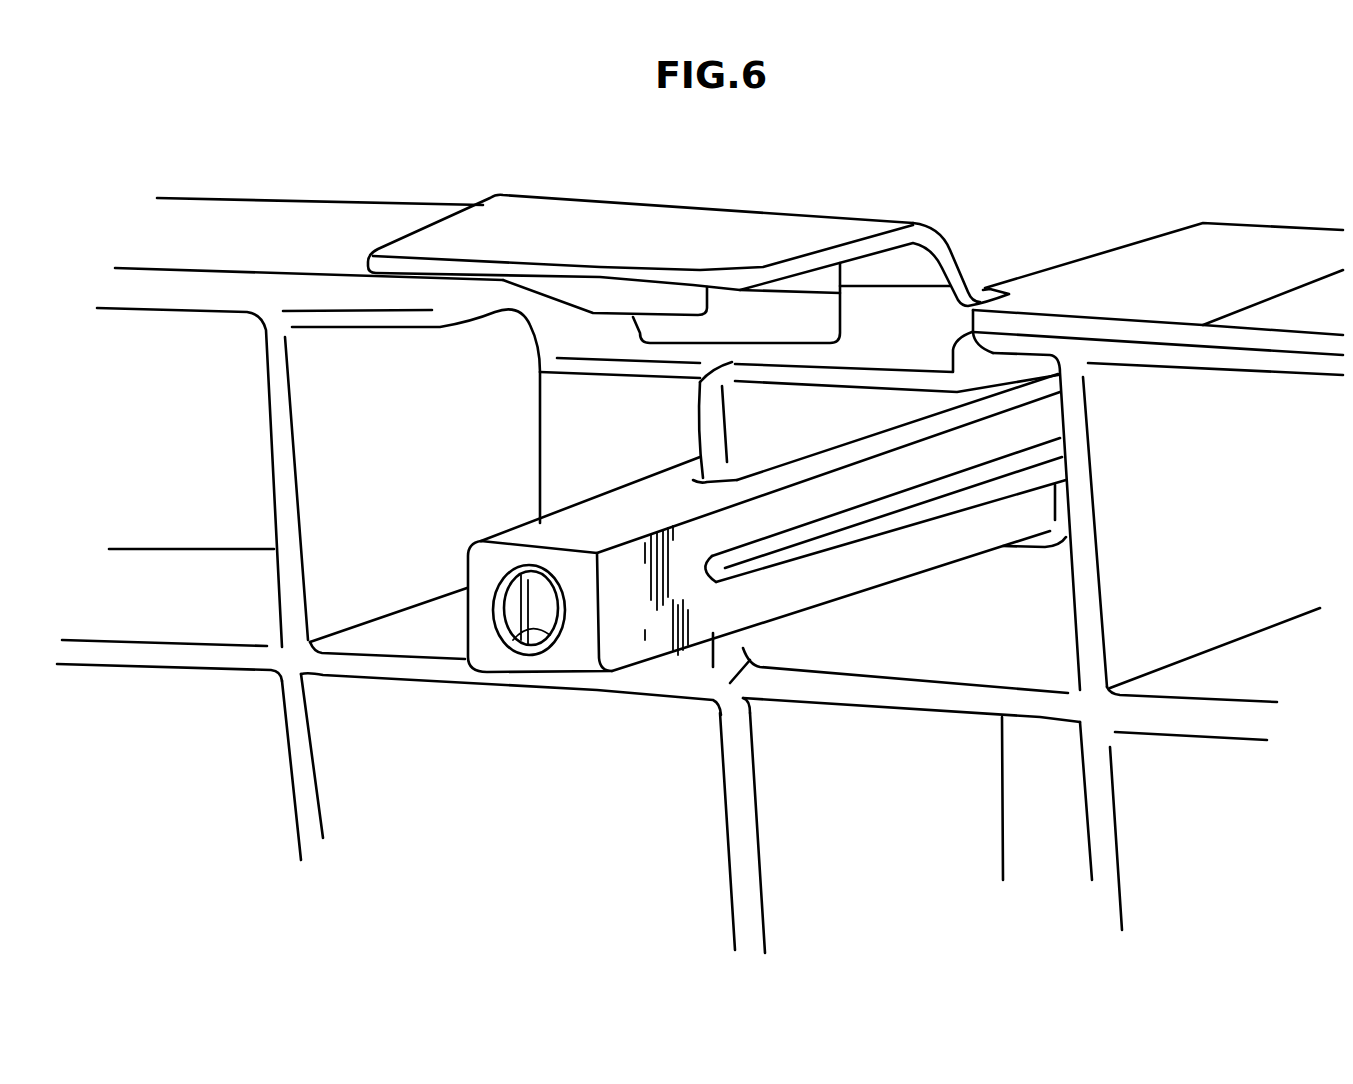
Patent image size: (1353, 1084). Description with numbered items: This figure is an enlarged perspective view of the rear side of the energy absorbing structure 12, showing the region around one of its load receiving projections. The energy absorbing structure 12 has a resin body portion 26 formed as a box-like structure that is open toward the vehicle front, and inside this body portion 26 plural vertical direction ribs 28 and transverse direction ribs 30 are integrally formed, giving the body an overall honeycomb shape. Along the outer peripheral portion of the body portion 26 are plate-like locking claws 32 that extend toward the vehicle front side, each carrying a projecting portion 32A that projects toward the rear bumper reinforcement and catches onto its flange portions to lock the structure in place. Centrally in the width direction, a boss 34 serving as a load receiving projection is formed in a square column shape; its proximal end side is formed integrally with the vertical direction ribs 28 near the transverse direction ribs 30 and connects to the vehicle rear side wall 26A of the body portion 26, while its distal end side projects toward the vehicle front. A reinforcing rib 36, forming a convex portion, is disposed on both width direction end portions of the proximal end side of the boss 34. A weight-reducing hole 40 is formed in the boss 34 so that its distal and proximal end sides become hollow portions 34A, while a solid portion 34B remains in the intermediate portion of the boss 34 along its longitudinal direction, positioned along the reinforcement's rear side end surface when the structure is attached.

The energy absorbing structure 12 is at (1080, 208).
The body portion 26 is at (333, 213).
The vehicle rear side wall 26A is at (577, 417).
The vertical direction ribs 28 is at (269, 437).
The transverse direction ribs 30 is at (172, 670).
The locking claws 32 is at (765, 228).
The projecting portion 32A is at (563, 288).
The boss 34 is at (728, 562).
The hollow portion 34A is at (628, 648).
The solid portion 34B is at (653, 493).
The rib 36 is at (957, 502).
The weight-reducing hole 40 is at (527, 627).